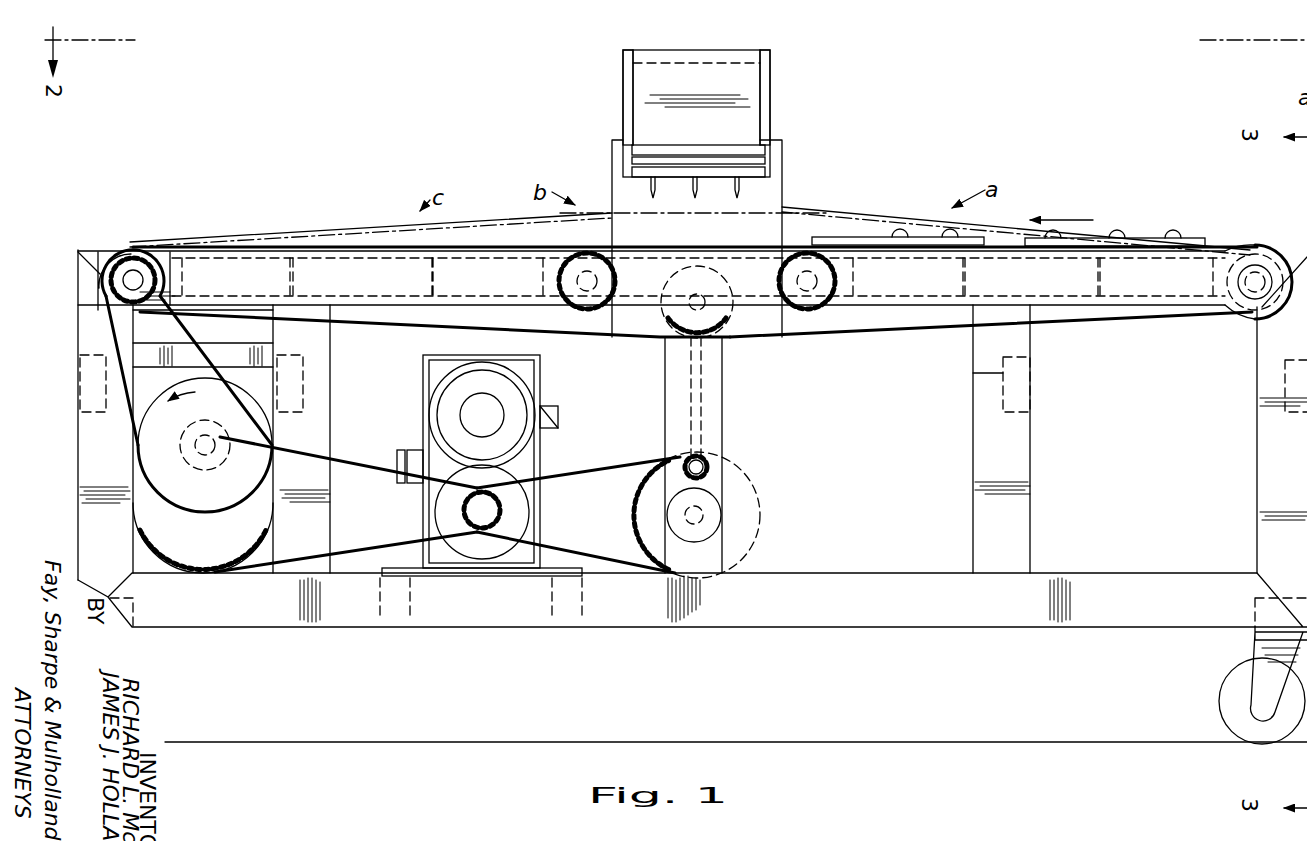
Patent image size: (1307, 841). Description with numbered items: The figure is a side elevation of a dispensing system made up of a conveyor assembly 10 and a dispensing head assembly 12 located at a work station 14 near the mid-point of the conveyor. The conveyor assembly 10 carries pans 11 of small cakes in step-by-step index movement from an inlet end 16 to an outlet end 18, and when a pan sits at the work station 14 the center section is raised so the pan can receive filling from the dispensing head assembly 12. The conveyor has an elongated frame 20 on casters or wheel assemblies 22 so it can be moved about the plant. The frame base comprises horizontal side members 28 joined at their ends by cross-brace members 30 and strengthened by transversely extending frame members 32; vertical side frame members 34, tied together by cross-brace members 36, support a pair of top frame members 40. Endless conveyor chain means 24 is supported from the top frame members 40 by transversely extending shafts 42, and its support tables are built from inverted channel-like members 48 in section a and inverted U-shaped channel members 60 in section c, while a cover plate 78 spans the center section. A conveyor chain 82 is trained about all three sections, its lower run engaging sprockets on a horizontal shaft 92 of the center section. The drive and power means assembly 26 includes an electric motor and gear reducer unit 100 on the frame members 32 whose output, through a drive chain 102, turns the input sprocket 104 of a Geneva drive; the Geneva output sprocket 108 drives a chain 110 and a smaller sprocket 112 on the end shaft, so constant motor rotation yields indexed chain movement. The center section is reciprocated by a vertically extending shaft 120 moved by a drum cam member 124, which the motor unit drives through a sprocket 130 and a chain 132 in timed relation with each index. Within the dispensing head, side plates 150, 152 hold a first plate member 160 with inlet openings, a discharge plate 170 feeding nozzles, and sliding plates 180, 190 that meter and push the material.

The conveyor assembly 10 is at (1050, 190).
The pans 11 is at (1125, 222).
The dispensing head assembly 12 is at (788, 91).
The work station 14 is at (830, 196).
The inlet end 16 is at (1247, 222).
The outlet end 18 is at (140, 232).
The frame 20 is at (960, 640).
The casters or wheel assemblies 22 is at (1222, 697).
The endless conveyor chain means 24 is at (350, 208).
The drive and power means assembly 26 is at (412, 388).
The side members 28 is at (662, 622).
The cross-brace members 30 is at (140, 608).
The transversely extending frame members 32 is at (412, 607).
The side frame members 34 is at (78, 452).
The cross-brace members 36 is at (78, 368).
The top frame members 40 is at (466, 308).
The transversely extending shafts 42 is at (148, 280).
The inverted channel-like members 48 is at (965, 285).
The inverted U-shaped channel members 60 is at (298, 292).
The cover plate 78 is at (655, 250).
The conveyor chain 82 is at (830, 338).
The horizontal shaft 92 is at (672, 320).
The electric motor and gear reducer unit 100 is at (556, 450).
The drive chain 102 is at (345, 470).
The input sprocket 104 is at (262, 532).
The output sprocket 108 is at (218, 500).
The chain 110 is at (110, 327).
The smaller sprocket 112 is at (118, 287).
The vertically extending shaft 120 is at (703, 446).
The drum cam member 124 is at (727, 520).
The sprocket 130 is at (630, 553).
The chain 132 is at (556, 480).
The side plate 150 is at (624, 102).
The side plate 152 is at (772, 127).
The first plate member 160 is at (655, 148).
The discharge plate 170 is at (652, 180).
The plate 180 is at (768, 170).
The plate 190 is at (765, 158).